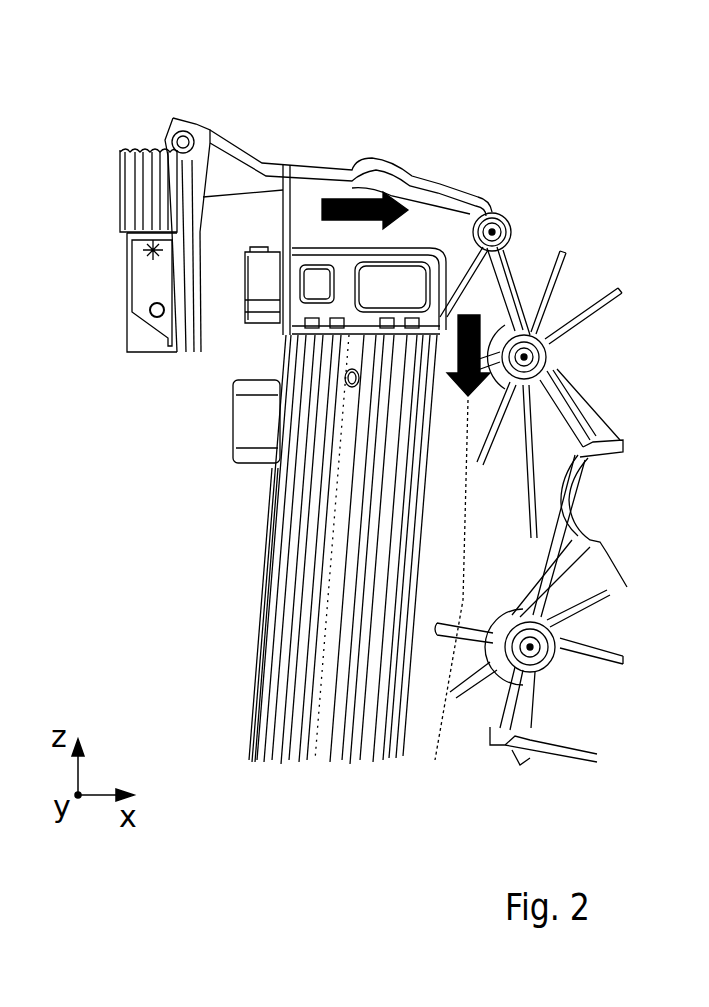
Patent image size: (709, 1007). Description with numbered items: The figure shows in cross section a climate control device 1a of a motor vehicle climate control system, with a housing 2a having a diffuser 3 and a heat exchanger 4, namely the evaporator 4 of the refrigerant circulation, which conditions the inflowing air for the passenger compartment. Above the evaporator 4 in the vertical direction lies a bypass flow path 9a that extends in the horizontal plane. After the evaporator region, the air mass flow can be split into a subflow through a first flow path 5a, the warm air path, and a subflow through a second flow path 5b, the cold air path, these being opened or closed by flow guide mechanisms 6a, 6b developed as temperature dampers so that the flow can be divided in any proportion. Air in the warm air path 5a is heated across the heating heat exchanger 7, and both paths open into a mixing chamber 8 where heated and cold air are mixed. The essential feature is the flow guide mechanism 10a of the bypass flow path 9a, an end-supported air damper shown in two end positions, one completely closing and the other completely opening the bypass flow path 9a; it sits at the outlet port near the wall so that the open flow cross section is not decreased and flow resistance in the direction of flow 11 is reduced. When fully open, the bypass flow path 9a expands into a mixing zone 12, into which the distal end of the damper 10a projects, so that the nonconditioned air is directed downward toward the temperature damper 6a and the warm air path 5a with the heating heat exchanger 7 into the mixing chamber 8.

The climate control device 1a is at (621, 95).
The housing 2a is at (480, 194).
The diffuser 3 is at (168, 559).
The heat exchanger 4 is at (265, 695).
The first flow path 5a is at (583, 705).
The second flow path 5b is at (582, 370).
The flow guide mechanism 6a is at (530, 647).
The flow guide mechanism 6b is at (524, 357).
The heat exchanger 7 is at (603, 503).
The mixing chamber 8 is at (666, 292).
The bypass flow path 9a is at (432, 196).
The flow guide mechanism 10a is at (492, 232).
The direction of flow 11 is at (347, 200).
The mixing zone 12 is at (511, 540).